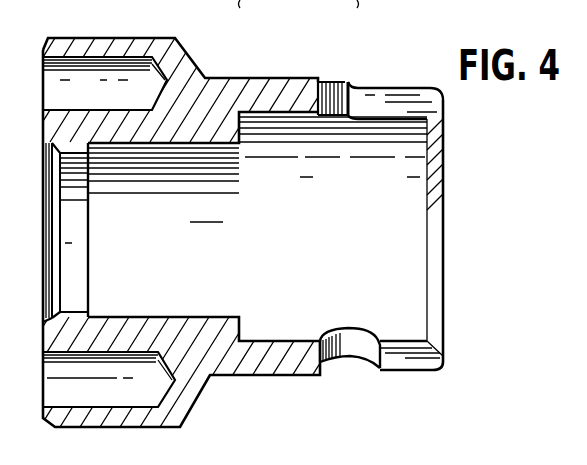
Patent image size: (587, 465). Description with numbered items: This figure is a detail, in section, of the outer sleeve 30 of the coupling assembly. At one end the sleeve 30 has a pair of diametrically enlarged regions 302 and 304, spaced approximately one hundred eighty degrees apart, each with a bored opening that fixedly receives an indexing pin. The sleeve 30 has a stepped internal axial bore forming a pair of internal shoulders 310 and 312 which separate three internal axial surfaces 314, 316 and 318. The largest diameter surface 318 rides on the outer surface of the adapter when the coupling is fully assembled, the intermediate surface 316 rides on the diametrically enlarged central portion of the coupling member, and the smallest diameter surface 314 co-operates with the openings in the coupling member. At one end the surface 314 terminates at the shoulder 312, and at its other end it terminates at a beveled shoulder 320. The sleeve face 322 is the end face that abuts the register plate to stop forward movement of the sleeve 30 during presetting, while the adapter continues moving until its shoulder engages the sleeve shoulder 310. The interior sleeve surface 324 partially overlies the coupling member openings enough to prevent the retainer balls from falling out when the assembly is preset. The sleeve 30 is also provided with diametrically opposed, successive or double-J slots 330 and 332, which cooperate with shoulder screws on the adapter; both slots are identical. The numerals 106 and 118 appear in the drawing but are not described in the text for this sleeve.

The outer sleeve 30 is at (303, 377).
The connector portion 106 is at (257, 17).
The connector portion 118 is at (345, 17).
The diametrically enlarged region 302 is at (119, 46).
The diametrically enlarged region 304 is at (112, 417).
The internal shoulder 310 is at (243, 325).
The internal shoulder 312 is at (90, 316).
The internal axial surface 314 is at (84, 314).
The internal axial surface 316 is at (183, 320).
The internal axial surface 318 is at (310, 342).
The beveled shoulder 320 is at (58, 310).
The sleeve face 322 is at (45, 327).
The interior sleeve surface 324 is at (43, 312).
The double-J slot 330 is at (368, 99).
The double-J slot 332 is at (372, 367).